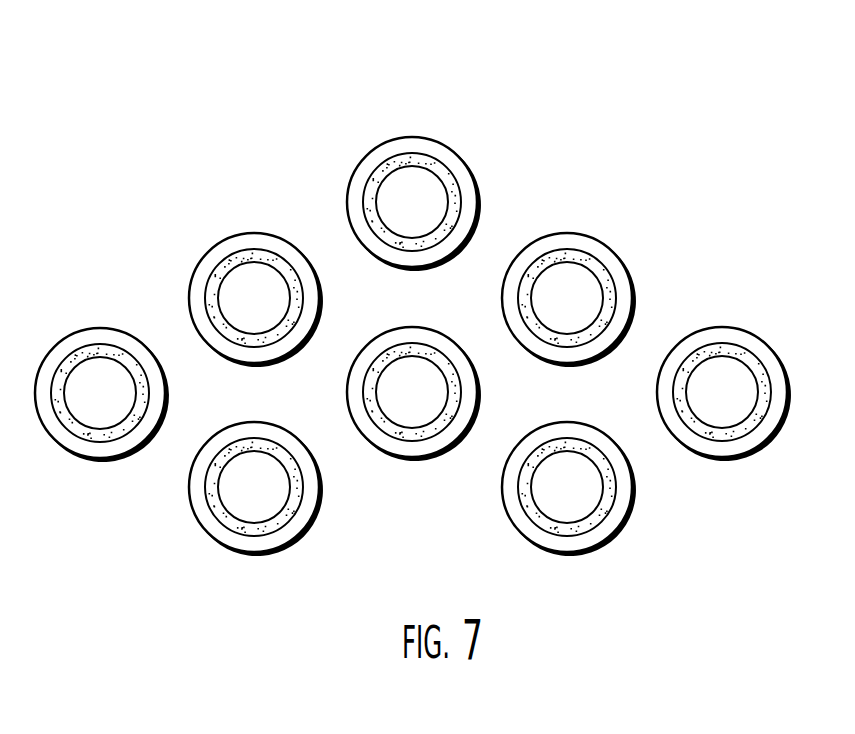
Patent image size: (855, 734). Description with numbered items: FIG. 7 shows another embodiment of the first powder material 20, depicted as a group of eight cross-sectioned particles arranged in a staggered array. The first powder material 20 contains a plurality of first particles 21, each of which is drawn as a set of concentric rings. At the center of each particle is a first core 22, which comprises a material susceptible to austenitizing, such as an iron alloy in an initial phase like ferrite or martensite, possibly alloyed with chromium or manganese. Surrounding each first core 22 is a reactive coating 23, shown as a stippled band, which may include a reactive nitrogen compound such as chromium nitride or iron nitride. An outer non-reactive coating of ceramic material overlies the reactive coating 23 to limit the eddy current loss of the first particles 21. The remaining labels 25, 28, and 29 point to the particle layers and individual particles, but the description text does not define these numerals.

The first powder material 20 is at (150, 122).
The first particles 21 is at (380, 122).
The first core 22 is at (567, 483).
The reactive coating 23 is at (742, 350).
The cladding layer 25 is at (568, 255).
The outer coating 28 is at (608, 288).
The optical fiber 29 is at (92, 340).